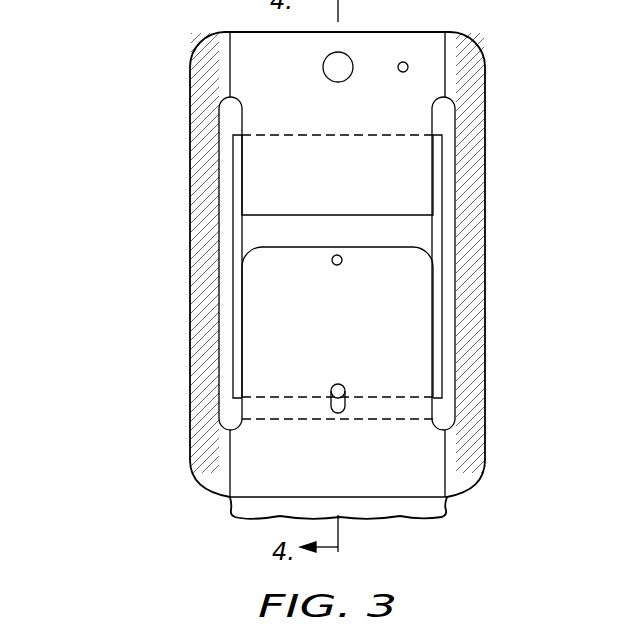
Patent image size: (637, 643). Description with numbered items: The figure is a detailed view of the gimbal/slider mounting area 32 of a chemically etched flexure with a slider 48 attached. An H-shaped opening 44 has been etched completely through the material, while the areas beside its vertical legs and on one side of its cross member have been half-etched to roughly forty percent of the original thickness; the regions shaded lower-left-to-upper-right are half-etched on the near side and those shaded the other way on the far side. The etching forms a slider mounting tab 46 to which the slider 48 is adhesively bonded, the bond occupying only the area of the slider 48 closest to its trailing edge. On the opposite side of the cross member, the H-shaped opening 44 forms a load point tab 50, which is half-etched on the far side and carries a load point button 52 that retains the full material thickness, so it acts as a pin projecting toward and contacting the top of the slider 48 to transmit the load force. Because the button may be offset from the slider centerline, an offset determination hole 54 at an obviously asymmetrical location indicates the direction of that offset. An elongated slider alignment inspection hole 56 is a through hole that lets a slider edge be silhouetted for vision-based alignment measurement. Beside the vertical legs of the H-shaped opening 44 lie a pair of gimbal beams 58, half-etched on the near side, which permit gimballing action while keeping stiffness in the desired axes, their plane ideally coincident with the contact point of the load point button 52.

The gimbal/slider mounting area 32 is at (118, 76).
The H-shaped opening 44 is at (232, 120).
The slider mounting tab 46 is at (397, 192).
The slider 48 is at (438, 243).
The load point tab 50 is at (430, 344).
The load point button 52 is at (352, 60).
The offset determination hole 54 is at (402, 72).
The slider alignment inspection hole 56 is at (342, 403).
The gimbal beams 58 is at (200, 246).